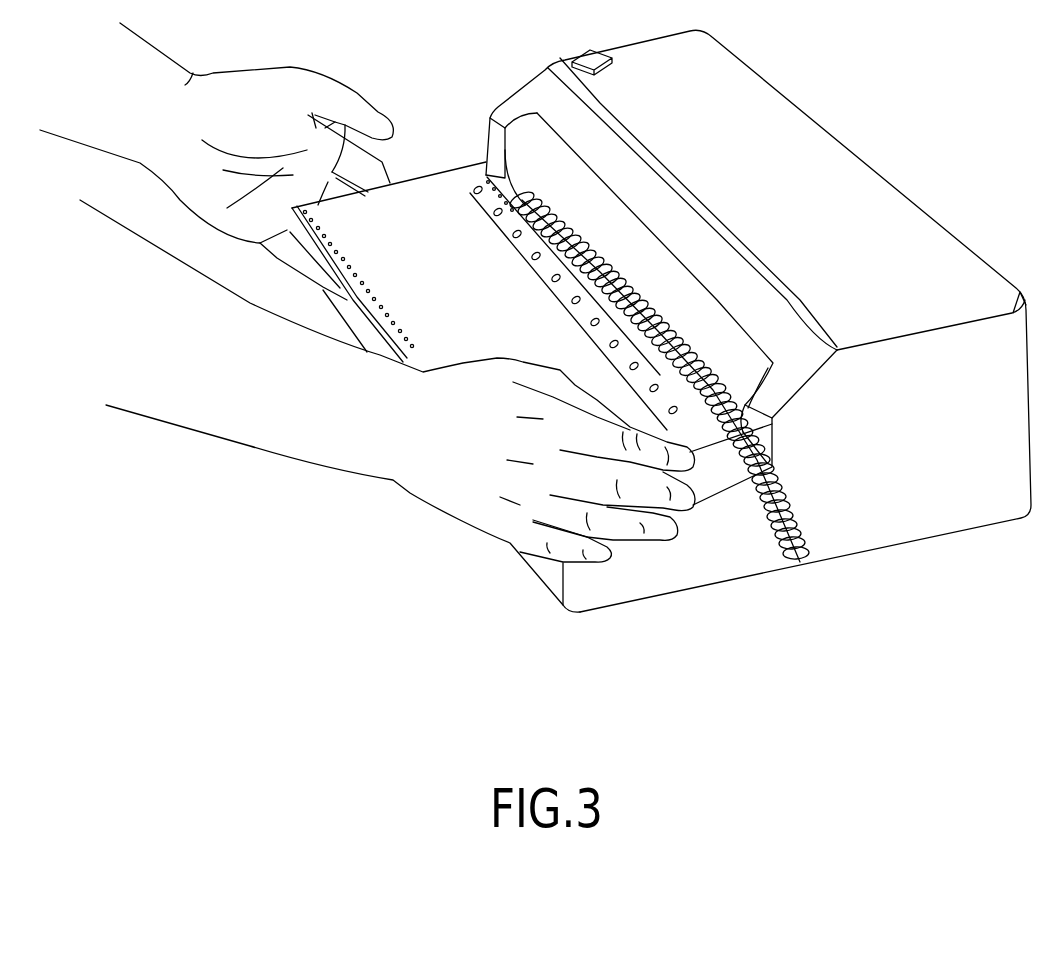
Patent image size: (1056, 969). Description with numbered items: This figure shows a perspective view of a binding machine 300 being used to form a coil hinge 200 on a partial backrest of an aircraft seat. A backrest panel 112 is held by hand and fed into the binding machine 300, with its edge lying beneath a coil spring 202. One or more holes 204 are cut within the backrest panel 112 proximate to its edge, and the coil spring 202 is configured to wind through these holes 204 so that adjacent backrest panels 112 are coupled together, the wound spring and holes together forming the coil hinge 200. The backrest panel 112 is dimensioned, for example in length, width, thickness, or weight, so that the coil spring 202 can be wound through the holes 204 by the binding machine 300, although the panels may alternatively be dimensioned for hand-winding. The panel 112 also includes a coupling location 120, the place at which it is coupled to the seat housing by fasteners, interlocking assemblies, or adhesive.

The backrest panel 112 is at (387, 207).
The coupling location 120 is at (512, 258).
The coil hinge 200 is at (815, 597).
The coil spring 202 is at (810, 560).
The holes 204 is at (480, 177).
The binding machine 300 is at (833, 157).